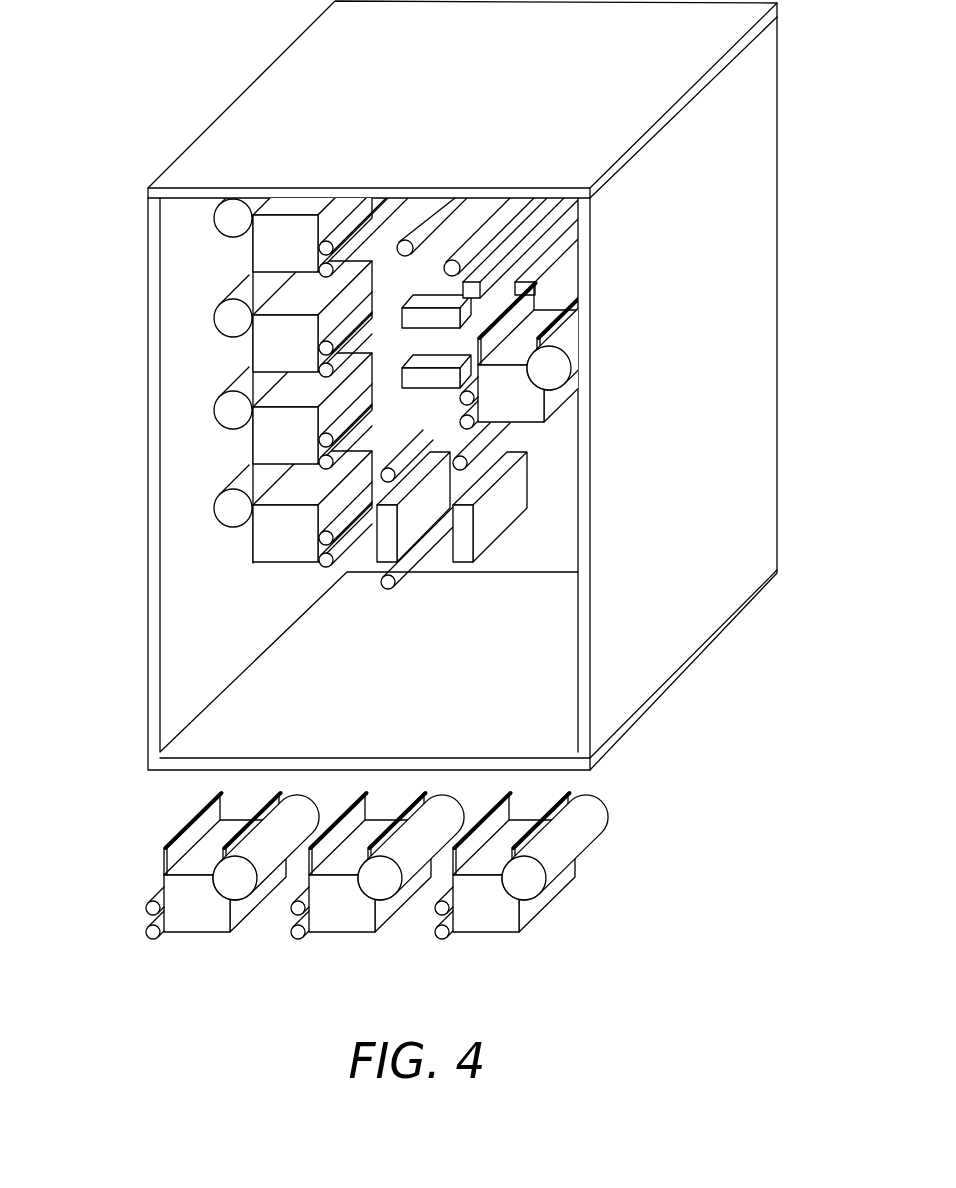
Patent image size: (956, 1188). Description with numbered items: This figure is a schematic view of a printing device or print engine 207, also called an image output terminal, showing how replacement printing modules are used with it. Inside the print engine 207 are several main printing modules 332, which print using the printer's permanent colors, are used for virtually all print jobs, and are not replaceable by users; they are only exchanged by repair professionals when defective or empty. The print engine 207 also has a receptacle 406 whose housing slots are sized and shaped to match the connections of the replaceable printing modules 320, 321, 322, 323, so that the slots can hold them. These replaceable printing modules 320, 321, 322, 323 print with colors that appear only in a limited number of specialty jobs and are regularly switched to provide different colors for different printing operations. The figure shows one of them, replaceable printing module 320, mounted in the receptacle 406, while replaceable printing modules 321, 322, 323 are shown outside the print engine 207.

The print engine 207 is at (296, 85).
The receptacle 406 is at (557, 248).
The main printing modules 332 is at (275, 250).
The replaceable printing module 320 is at (530, 407).
The replaceable printing module 321 is at (201, 915).
The replaceable printing module 322 is at (348, 915).
The replaceable printing module 323 is at (492, 915).